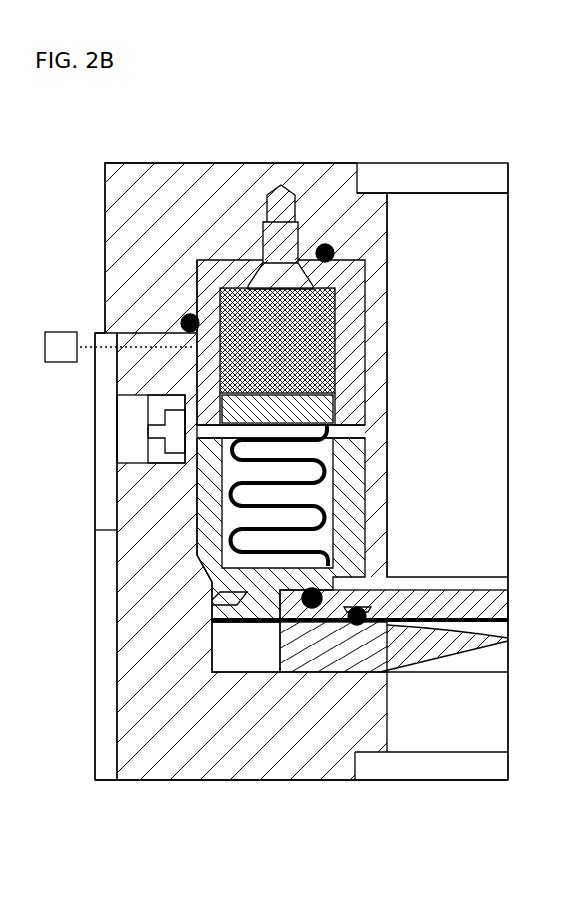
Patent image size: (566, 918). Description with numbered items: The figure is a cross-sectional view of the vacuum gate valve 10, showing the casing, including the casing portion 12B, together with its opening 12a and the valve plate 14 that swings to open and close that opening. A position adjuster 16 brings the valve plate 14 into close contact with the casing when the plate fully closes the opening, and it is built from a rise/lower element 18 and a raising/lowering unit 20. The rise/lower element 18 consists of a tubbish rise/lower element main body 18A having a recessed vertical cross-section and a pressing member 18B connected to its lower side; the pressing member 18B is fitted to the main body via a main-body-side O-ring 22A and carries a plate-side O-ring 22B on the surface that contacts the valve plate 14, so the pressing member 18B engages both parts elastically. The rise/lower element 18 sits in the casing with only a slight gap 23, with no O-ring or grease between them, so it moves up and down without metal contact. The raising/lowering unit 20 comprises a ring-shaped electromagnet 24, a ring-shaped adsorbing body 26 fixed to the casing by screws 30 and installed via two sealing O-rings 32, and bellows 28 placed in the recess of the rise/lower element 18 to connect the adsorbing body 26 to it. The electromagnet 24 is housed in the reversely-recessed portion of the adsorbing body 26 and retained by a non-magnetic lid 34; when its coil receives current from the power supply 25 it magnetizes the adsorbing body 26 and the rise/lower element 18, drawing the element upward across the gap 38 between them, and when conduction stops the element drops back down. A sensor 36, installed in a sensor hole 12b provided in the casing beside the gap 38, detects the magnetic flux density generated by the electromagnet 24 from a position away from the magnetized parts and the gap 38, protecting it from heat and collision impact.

The vacuum gate valve 10 is at (105, 152).
The upper housing block 12B is at (178, 195).
The opening 12a is at (450, 700).
The sensor hole 12b is at (130, 408).
The sensor 36 is at (150, 431).
The power supply 25 is at (60, 332).
The rise/lower element 18 is at (46, 492).
The rise/lower element main body 18A is at (197, 480).
The pressing member 18B is at (225, 598).
The screws 30 is at (272, 248).
The adsorbing body 26 is at (368, 315).
The electromagnet 24 is at (333, 365).
The lid 34 is at (335, 415).
The gap 38 is at (355, 431).
The gap 23 is at (358, 541).
The bellows 28 is at (333, 523).
The sealing O-rings 32 is at (326, 243).
The main-body-side O-ring 22A is at (380, 575).
The plate-side O-ring 22B is at (375, 612).
The valve plate 14 is at (300, 650).
The position adjuster 16 is at (402, 284).
The raising/lowering unit 20 is at (388, 347).